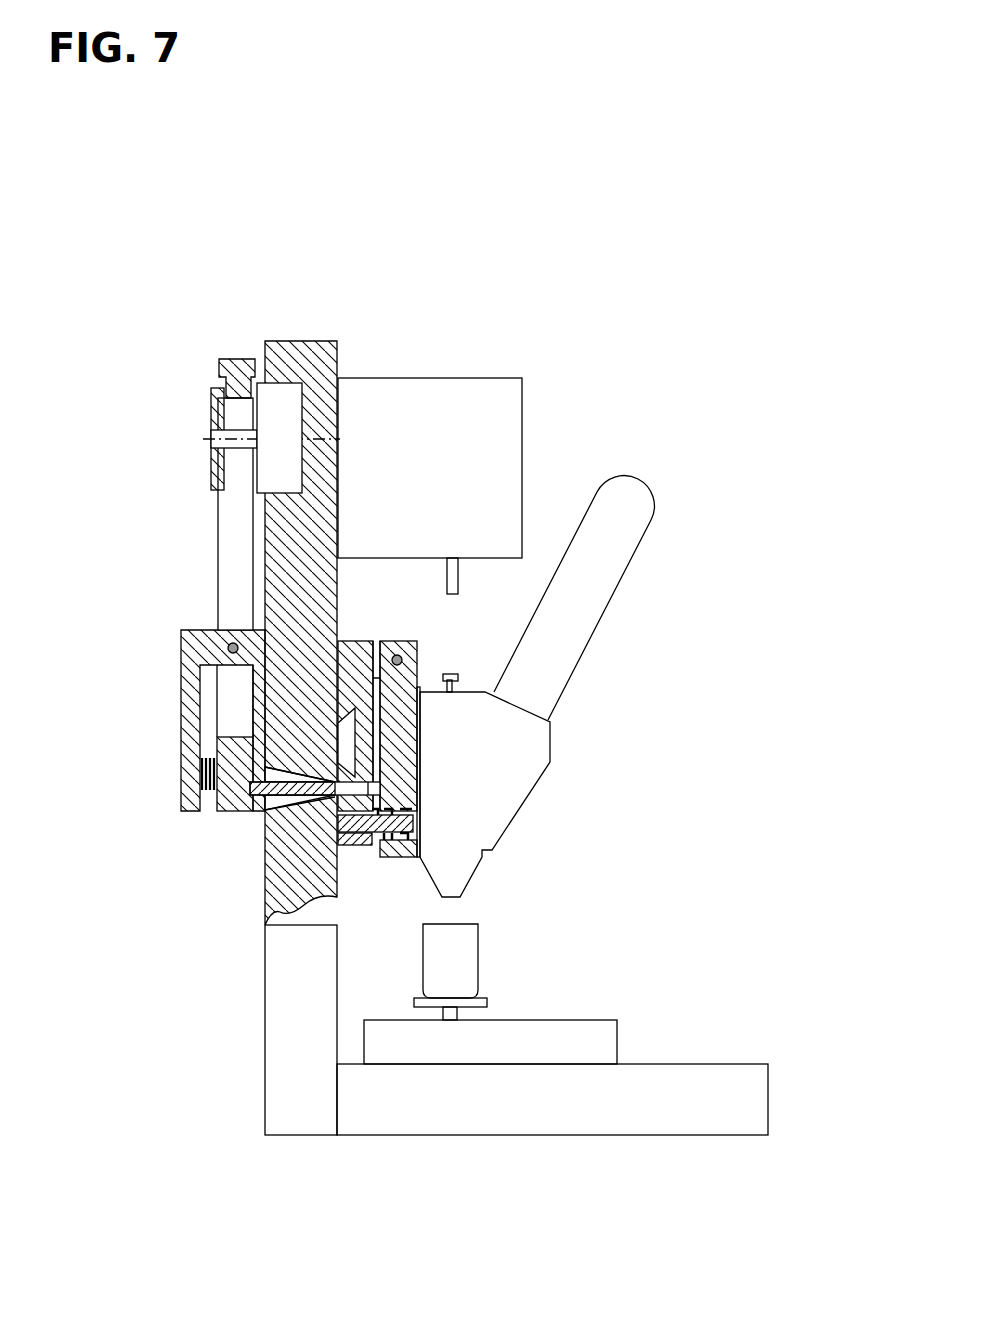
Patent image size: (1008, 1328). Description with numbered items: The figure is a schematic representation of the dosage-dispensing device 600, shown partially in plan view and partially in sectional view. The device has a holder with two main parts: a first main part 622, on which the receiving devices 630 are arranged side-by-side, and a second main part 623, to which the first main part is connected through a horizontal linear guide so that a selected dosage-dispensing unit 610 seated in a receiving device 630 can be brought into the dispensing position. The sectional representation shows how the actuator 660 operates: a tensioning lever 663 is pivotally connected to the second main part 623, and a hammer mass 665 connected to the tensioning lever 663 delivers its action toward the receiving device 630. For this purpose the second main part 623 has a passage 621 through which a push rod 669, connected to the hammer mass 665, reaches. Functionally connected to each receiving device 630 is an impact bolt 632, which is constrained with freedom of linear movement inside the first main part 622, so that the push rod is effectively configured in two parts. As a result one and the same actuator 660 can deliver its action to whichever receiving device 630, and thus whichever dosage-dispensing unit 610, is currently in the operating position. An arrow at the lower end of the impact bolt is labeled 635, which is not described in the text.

The dosage-dispensing device 600 is at (490, 345).
The dosage-dispensing unit 610 is at (513, 737).
The passage 621 is at (265, 827).
The first main part 622 is at (357, 657).
The second main part 623 is at (295, 973).
The receiving device 630 is at (398, 730).
The impact bolt 632 is at (367, 792).
The blade 635 is at (427, 832).
The actuator 660 is at (177, 450).
The tensioning lever 663 is at (233, 557).
The hammer mass 665 is at (222, 757).
The push rod 669 is at (265, 813).